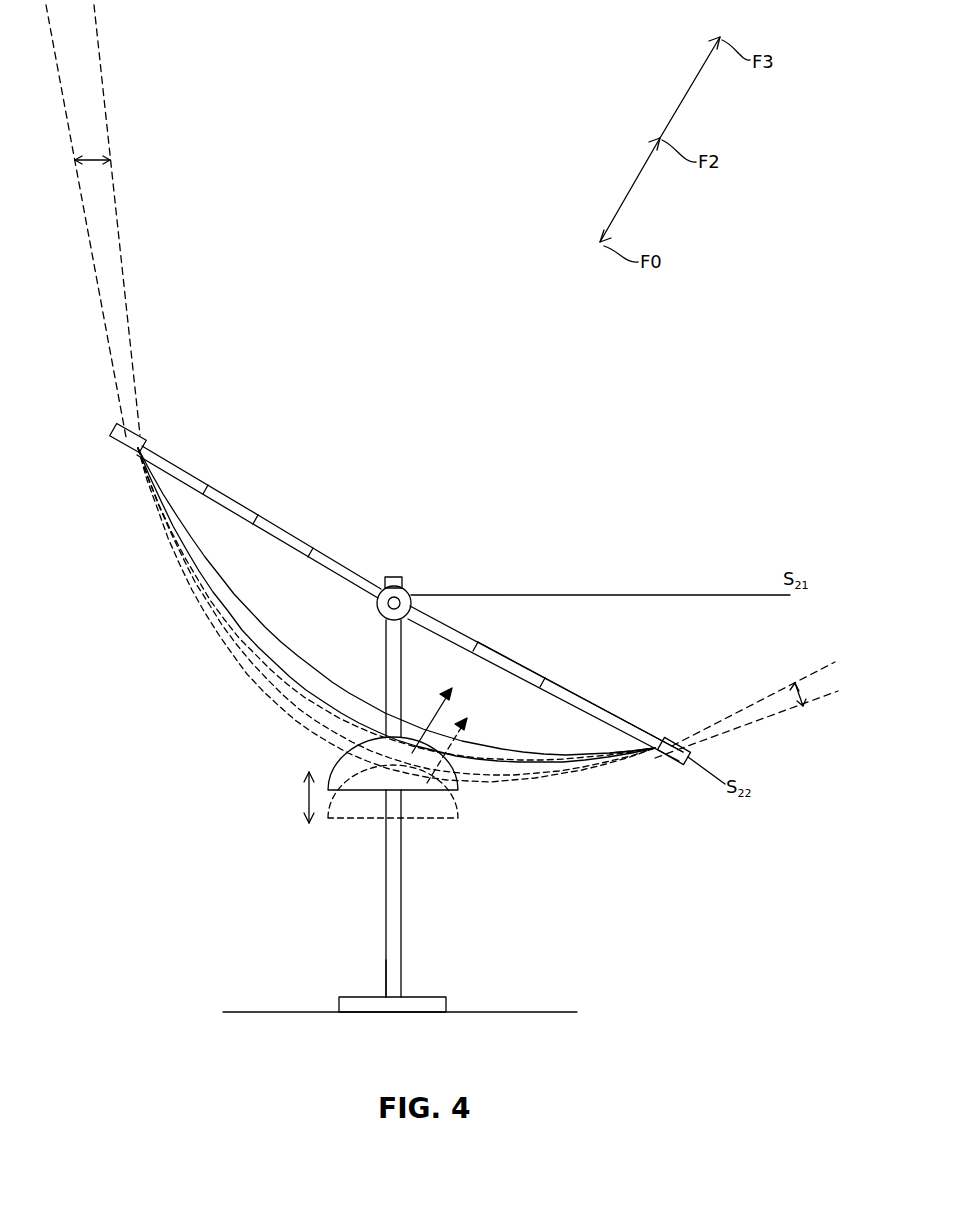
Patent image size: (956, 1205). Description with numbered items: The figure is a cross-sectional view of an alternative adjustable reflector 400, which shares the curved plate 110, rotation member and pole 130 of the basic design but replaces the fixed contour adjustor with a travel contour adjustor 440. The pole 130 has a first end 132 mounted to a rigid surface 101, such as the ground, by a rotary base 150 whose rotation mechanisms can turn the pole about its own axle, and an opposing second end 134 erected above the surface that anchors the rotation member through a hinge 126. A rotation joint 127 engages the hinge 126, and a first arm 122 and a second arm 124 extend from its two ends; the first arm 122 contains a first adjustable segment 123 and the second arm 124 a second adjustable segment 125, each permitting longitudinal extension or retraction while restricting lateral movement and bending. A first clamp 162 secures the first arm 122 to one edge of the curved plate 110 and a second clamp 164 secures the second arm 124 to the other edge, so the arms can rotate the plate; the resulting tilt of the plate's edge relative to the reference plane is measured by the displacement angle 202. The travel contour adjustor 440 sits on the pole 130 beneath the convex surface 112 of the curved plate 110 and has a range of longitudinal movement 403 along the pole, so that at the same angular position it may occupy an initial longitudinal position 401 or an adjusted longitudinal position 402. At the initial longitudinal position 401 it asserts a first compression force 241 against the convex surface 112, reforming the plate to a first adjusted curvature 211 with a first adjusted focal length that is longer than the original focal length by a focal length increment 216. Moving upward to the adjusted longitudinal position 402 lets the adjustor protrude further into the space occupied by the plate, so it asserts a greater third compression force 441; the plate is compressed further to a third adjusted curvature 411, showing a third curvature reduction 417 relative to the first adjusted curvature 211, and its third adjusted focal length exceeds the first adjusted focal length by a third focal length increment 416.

The rigid surface 101 is at (571, 1011).
The curved plate 110 is at (509, 750).
The convex surface 112 is at (647, 770).
The first arm 122 is at (210, 495).
The first adjustable segment 123 is at (303, 541).
The second arm 124 is at (561, 697).
The second adjustable segment 125 is at (530, 666).
The hinge 126 is at (378, 603).
The rotation joint 127 is at (406, 619).
The pole 130 is at (367, 903).
The first end 132 is at (384, 992).
The second end 134 is at (403, 580).
The rotary base 150 is at (449, 993).
The first clamp 162 is at (118, 428).
The second clamp 164 is at (682, 768).
The displacement angle 202 is at (449, 624).
The first adjusted curvature 211 is at (120, 228).
The focal length increment 216 is at (637, 178).
The first compression force 241 is at (459, 744).
The alternative adjustable reflector 400 is at (350, 294).
The initial longitudinal position 401 is at (436, 820).
The adjusted longitudinal position 402 is at (470, 790).
The range of longitudinal movement 403 is at (303, 797).
The third adjusted curvature 411 is at (97, 283).
The third focal length increment 416 is at (690, 88).
The third curvature reduction 417 is at (83, 155).
The travel contour adjustor 440 is at (515, 870).
The third compression force 441 is at (443, 710).